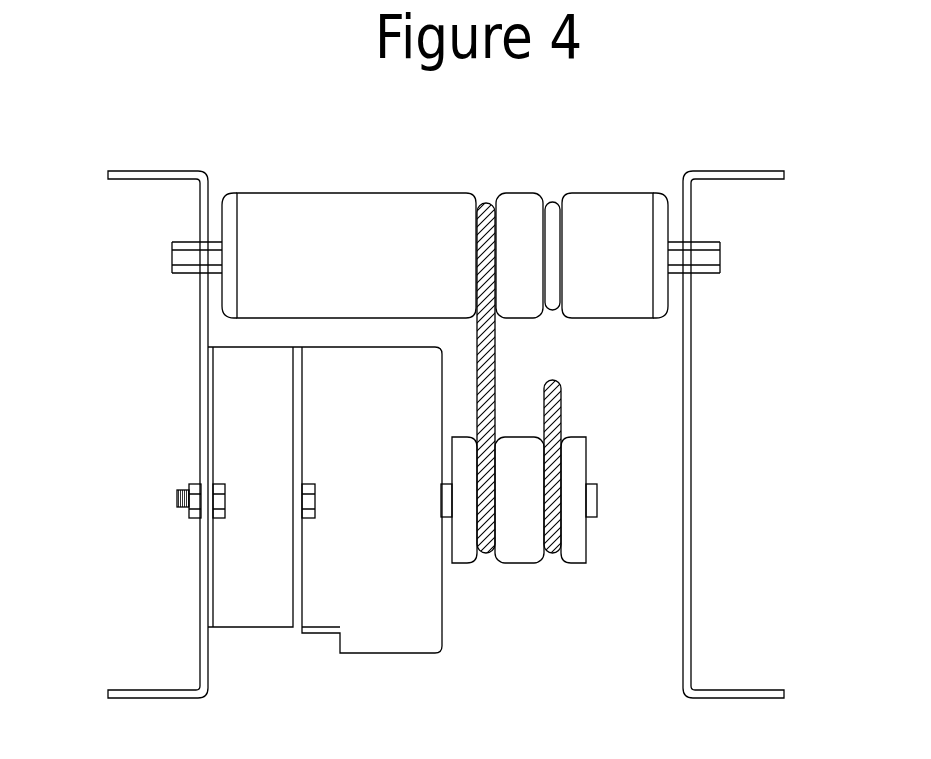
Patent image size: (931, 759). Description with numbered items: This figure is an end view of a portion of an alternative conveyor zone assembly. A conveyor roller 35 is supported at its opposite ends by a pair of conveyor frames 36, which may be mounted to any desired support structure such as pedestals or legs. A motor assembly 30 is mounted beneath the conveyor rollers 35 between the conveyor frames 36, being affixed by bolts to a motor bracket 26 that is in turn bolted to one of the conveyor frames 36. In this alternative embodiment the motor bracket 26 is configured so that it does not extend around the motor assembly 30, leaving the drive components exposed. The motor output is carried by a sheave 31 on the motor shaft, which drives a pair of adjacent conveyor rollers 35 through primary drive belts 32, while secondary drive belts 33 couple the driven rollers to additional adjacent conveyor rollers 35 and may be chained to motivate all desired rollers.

The motor bracket 26 is at (259, 547).
The motor assembly 30 is at (375, 550).
The sheave 31 is at (522, 497).
The primary drive belts 32 is at (552, 390).
The secondary drive belts 33 is at (553, 245).
The conveyor rollers 35 is at (292, 253).
The conveyor frames 36 is at (150, 177).